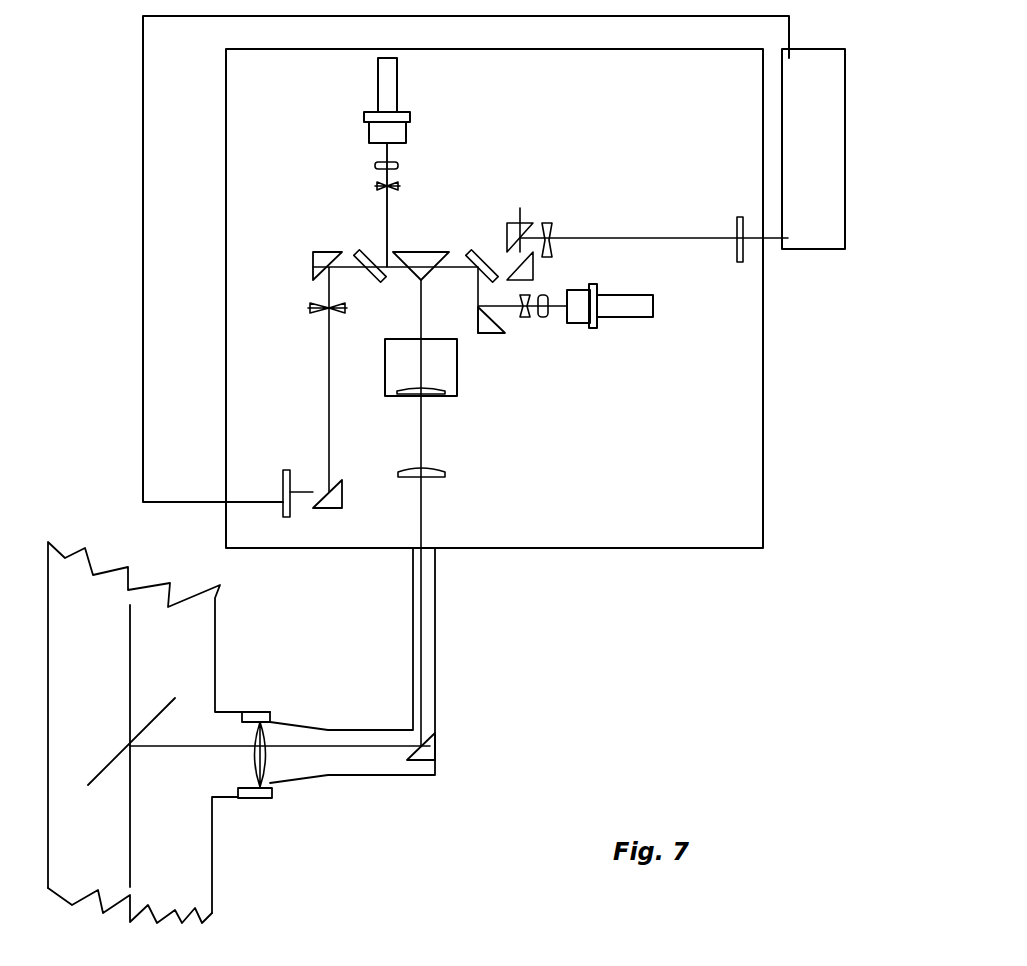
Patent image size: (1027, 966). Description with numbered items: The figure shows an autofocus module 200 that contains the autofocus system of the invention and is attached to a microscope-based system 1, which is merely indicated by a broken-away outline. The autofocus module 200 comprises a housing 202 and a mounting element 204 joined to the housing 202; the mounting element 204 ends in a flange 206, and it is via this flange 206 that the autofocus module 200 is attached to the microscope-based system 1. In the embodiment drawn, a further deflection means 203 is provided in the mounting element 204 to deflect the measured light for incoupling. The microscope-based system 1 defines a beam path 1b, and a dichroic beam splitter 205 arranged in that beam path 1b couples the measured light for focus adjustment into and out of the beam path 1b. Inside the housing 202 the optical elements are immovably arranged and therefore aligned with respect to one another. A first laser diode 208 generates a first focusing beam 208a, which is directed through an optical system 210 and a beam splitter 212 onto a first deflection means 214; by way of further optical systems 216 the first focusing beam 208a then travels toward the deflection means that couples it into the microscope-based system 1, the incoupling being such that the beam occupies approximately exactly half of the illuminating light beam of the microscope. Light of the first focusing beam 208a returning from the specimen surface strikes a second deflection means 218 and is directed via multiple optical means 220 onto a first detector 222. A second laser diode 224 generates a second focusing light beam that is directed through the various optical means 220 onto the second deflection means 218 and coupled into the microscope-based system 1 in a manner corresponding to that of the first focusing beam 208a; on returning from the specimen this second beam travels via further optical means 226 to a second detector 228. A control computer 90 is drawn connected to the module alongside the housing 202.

The microscope-based system 1 is at (85, 583).
The beam path 1b is at (130, 671).
The control computer 90 is at (788, 237).
The autofocus module 200 is at (534, 550).
The housing 202 is at (258, 210).
The deflection means 203 is at (436, 759).
The mounting element 204 is at (427, 657).
The dichroic beam splitter 205 is at (108, 762).
The flange 206 is at (283, 677).
The first laser diode 208 is at (385, 99).
The first focusing beam 208a is at (383, 228).
The optical system 210 is at (398, 165).
The beam splitter 212 is at (362, 276).
The first deflection means 214 is at (404, 252).
The further optical systems 216 is at (450, 372).
The second deflection means 218 is at (445, 252).
The multiple optical means 220 is at (558, 222).
The first detector 222 is at (737, 228).
The second laser diode 224 is at (608, 308).
The further optical means 226 is at (342, 500).
The second detector 228 is at (283, 490).